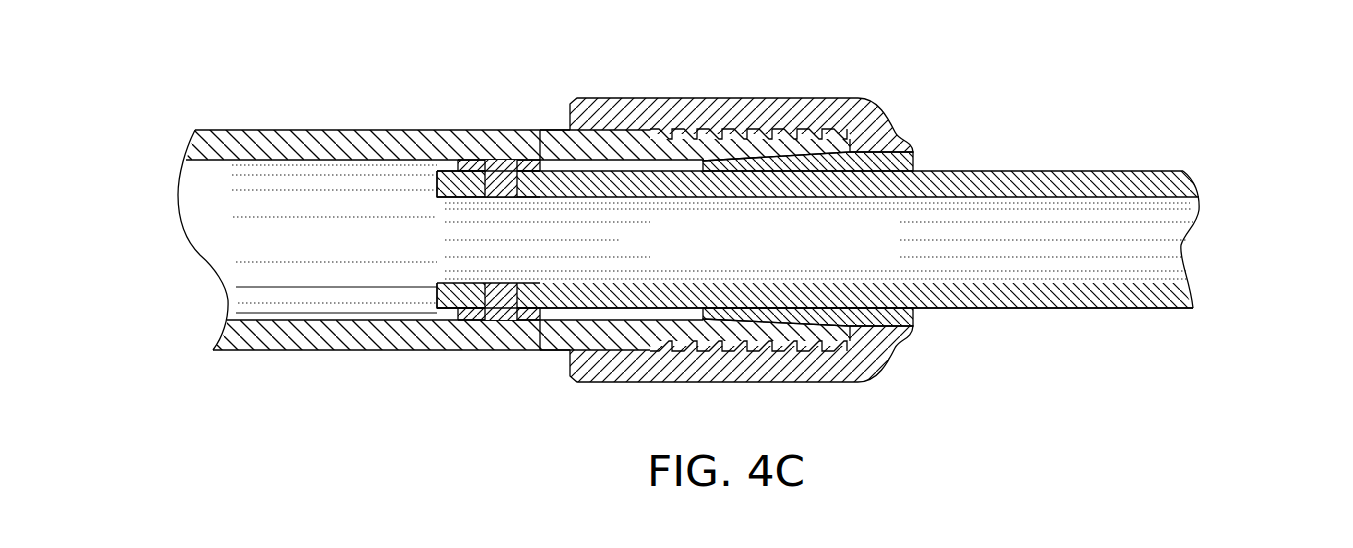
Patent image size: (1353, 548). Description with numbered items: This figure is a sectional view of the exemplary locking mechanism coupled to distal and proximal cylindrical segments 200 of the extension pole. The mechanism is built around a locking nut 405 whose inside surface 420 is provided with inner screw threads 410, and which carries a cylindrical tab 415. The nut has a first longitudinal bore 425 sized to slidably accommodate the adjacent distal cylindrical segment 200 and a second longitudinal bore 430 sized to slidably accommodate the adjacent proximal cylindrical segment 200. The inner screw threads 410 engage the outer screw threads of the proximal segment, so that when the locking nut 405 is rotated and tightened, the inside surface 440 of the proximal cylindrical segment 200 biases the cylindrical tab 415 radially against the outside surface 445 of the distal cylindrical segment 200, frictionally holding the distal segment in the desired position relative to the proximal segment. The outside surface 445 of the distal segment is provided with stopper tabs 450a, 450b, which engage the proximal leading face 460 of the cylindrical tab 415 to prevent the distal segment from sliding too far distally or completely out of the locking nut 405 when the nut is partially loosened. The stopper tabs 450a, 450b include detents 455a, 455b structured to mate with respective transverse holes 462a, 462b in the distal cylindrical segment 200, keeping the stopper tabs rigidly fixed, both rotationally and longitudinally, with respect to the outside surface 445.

The cylindrical segment 200 is at (312, 130).
The locking nut 405 is at (692, 250).
The inner screw threads 410 is at (795, 134).
The cylindrical tab 415 is at (927, 322).
The inside surface 420 is at (646, 145).
The first longitudinal bore 425 is at (930, 161).
The second longitudinal bore 430 is at (567, 360).
The inside surface 440 is at (250, 166).
The outside surface 445 is at (285, 365).
The stopper tab 450a is at (503, 165).
The stopper tab 450b is at (490, 316).
The detent 455a is at (518, 182).
The detent 455b is at (437, 283).
The proximal leading face 460 is at (690, 312).
The transverse hole 462a is at (495, 170).
The transverse hole 462b is at (503, 298).